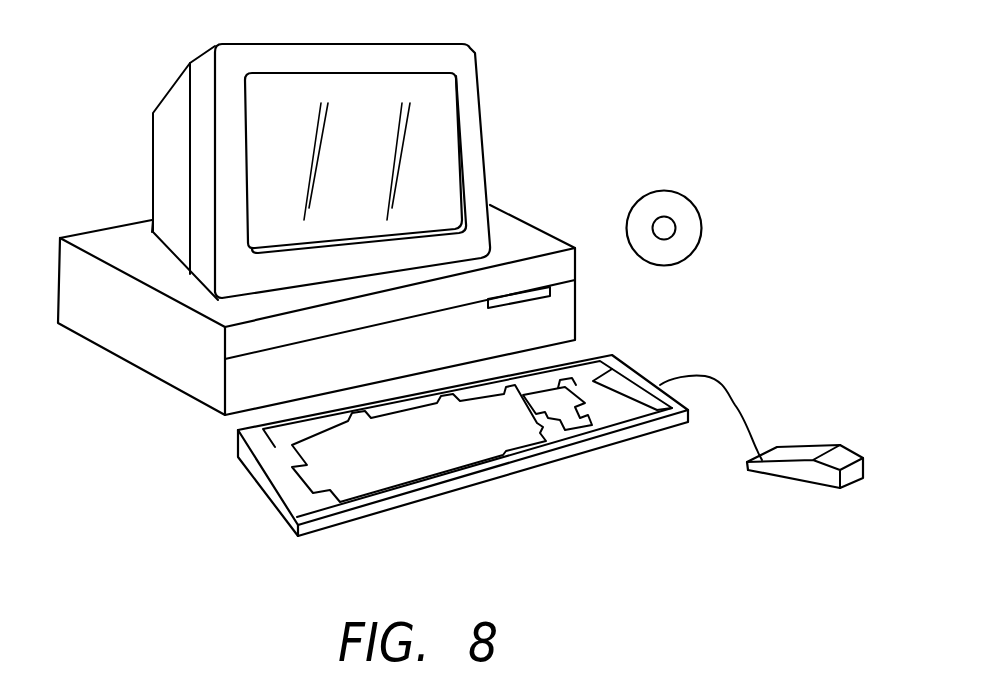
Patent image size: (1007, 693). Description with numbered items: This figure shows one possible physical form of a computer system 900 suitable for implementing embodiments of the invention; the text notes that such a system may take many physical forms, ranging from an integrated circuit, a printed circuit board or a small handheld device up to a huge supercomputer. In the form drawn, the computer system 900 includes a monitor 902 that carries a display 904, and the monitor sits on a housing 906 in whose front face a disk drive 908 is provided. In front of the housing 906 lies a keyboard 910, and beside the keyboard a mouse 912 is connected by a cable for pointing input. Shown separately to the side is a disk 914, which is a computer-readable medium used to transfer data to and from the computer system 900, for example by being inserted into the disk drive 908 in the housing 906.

The computer system 900 is at (645, 88).
The monitor 902 is at (483, 110).
The display 904 is at (427, 90).
The housing 906 is at (210, 407).
The disk drive 908 is at (550, 295).
The keyboard 910 is at (293, 523).
The mouse 912 is at (840, 445).
The disk 914 is at (687, 195).